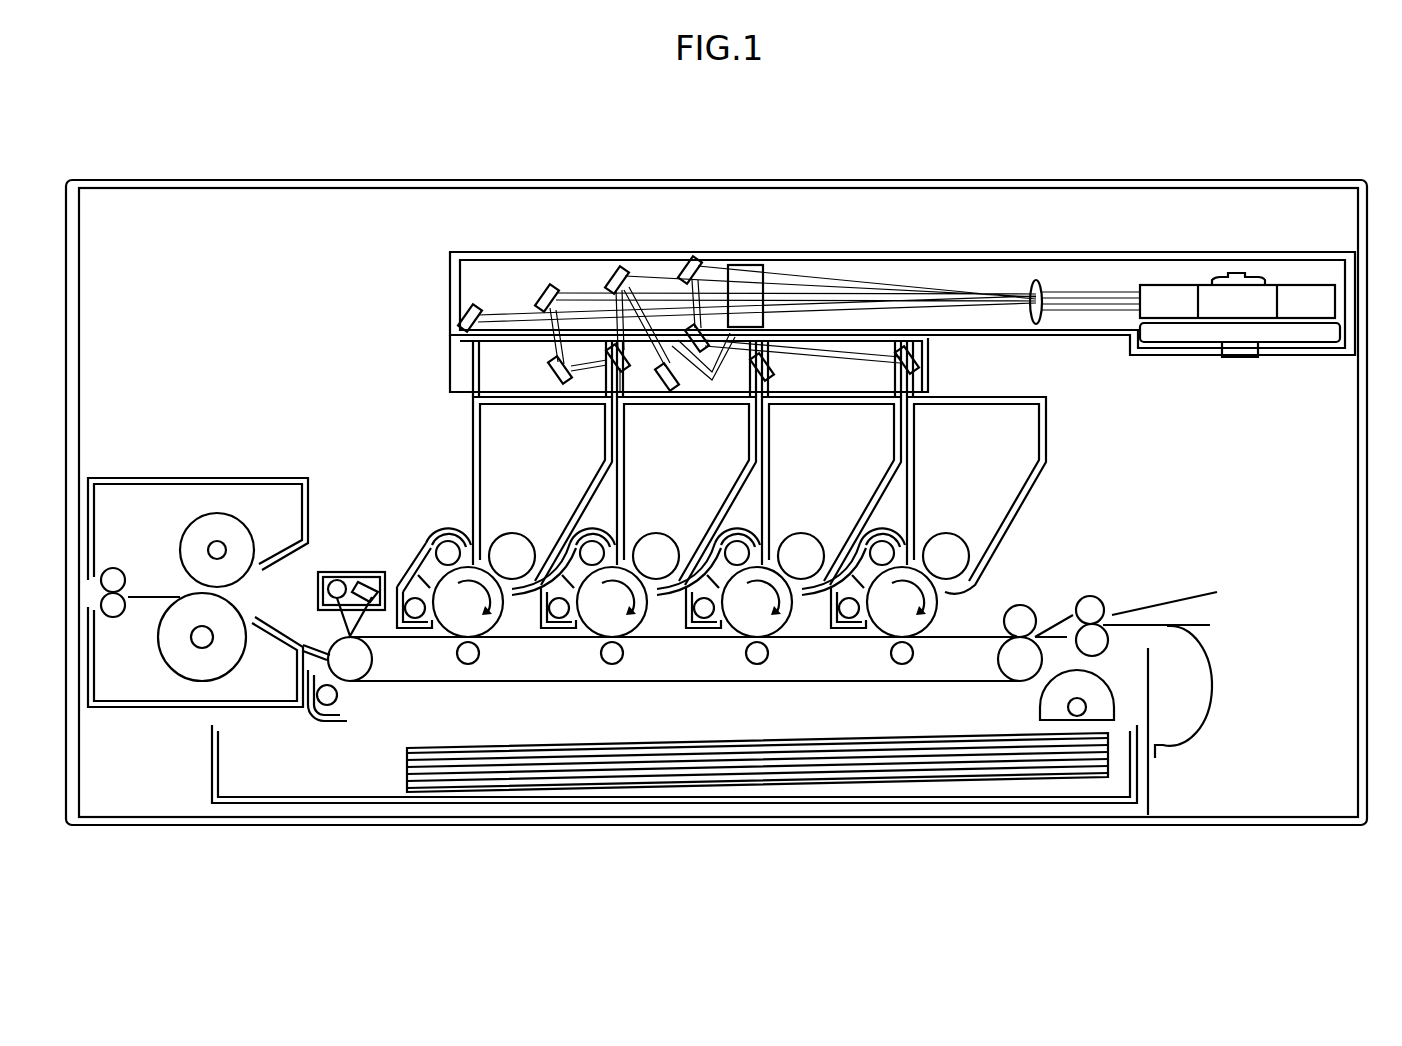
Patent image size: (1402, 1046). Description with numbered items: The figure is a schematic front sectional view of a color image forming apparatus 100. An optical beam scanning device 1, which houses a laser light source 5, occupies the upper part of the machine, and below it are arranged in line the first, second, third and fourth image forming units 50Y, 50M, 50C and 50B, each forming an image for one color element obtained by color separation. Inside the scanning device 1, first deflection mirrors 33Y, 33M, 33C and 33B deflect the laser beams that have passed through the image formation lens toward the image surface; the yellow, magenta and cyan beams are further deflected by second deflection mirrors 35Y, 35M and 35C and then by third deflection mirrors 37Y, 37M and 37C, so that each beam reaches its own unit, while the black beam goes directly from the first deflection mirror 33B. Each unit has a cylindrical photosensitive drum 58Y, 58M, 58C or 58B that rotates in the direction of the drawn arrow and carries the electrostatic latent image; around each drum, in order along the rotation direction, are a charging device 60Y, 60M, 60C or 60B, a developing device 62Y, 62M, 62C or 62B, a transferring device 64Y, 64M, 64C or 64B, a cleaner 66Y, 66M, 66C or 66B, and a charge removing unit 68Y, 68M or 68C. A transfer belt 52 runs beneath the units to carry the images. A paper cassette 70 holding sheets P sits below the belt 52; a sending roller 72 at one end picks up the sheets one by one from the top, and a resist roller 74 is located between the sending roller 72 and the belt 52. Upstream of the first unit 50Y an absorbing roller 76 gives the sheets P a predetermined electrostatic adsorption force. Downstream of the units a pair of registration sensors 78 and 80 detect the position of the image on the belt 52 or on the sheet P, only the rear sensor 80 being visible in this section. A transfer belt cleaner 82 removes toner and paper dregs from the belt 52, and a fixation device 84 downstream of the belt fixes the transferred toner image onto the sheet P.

The image forming apparatus 100 is at (1118, 181).
The optical beam scanning device 1 is at (1101, 346).
The laser light source unit 5 is at (1178, 275).
The first deflection mirror 33B is at (458, 318).
The first deflection mirror 33C is at (540, 288).
The first deflection mirror 33M is at (620, 272).
The first deflection mirror 33Y is at (696, 262).
The second deflection mirror 35C is at (550, 370).
The second deflection mirror 35M is at (660, 385).
The second deflection mirror 35Y is at (690, 330).
The third deflection mirror 37C is at (610, 350).
The third deflection mirror 37M is at (772, 375).
The third deflection mirror 37Y is at (922, 365).
The fourth image forming unit 50B is at (566, 446).
The third image forming unit 50C is at (686, 463).
The second image forming unit 50M is at (831, 463).
The first image forming unit 50Y is at (976, 467).
The transfer belt 52 is at (962, 636).
The photosensitive drum 58B is at (495, 617).
The photosensitive drum 58C is at (647, 618).
The photosensitive drum 58M is at (791, 616).
The photosensitive drum 58Y is at (926, 620).
The charging device 60B is at (448, 548).
The charging device 60C is at (567, 508).
The charging device 60M is at (748, 577).
The charging device 60Y is at (968, 526).
The developing device 62B is at (507, 552).
The developing device 62C is at (661, 538).
The developing device 62M is at (806, 538).
The developing device 62Y is at (1000, 549).
The transferring device 64B is at (468, 665).
The transferring device 64C is at (635, 677).
The transferring device 64M is at (796, 678).
The transferring device 64Y is at (924, 678).
The cleaner 66B is at (412, 565).
The cleaner 66C is at (568, 622).
The cleaner 66M is at (713, 645).
The cleaner 66Y is at (866, 648).
The charge removing unit 68C is at (544, 540).
The charge removing unit 68M is at (689, 535).
The charge removing unit 68Y is at (898, 539).
The paper cassette 70 is at (933, 792).
The sending roller 72 is at (1104, 686).
The resist roller 74 is at (1102, 598).
The absorbing roller 76 is at (1025, 607).
The registration sensor 78 is at (350, 659).
The registration sensor 80 is at (340, 572).
The transfer belt cleaner 82 is at (342, 712).
The fixation device 84 is at (150, 665).
The sheet P is at (787, 765).